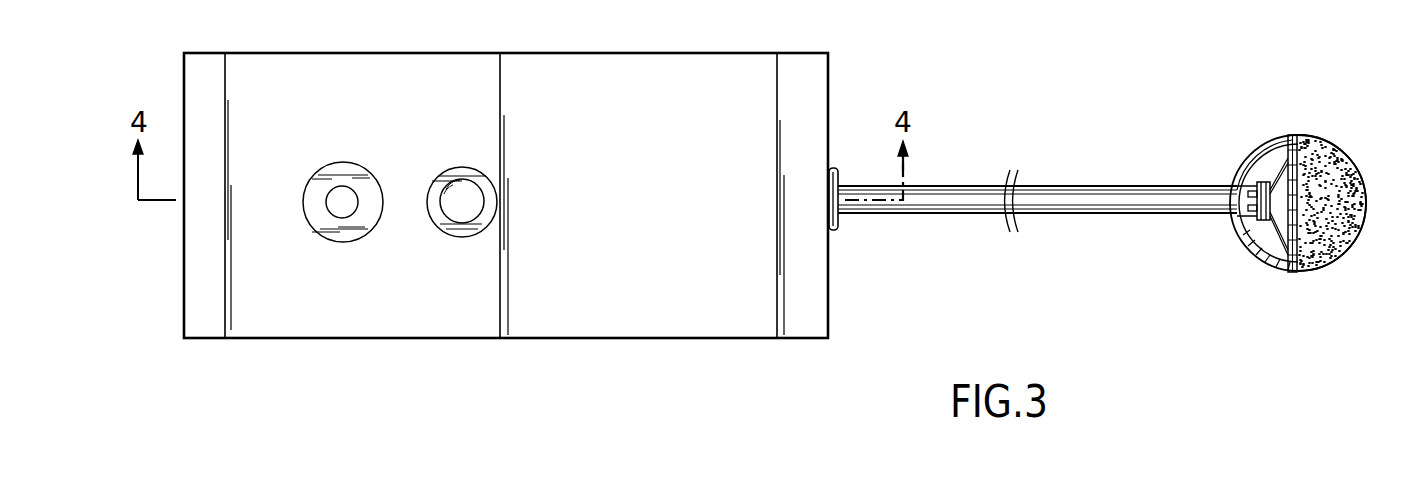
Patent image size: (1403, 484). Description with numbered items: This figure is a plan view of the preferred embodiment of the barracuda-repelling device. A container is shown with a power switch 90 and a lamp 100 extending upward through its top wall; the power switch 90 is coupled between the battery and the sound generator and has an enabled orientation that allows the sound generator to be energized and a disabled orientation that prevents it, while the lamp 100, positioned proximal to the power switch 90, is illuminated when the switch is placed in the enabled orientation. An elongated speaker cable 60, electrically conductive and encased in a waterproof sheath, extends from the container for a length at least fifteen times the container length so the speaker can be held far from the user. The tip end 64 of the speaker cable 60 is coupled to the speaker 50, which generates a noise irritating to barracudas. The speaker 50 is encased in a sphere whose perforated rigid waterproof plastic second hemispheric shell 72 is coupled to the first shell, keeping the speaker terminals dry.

The power switch 90 is at (340, 193).
The lamp 100 is at (452, 219).
The speaker cable 60 is at (1047, 192).
The tip end 64 is at (1228, 198).
The speaker 50 is at (1274, 222).
The second hemispheric shell 72 is at (1320, 141).